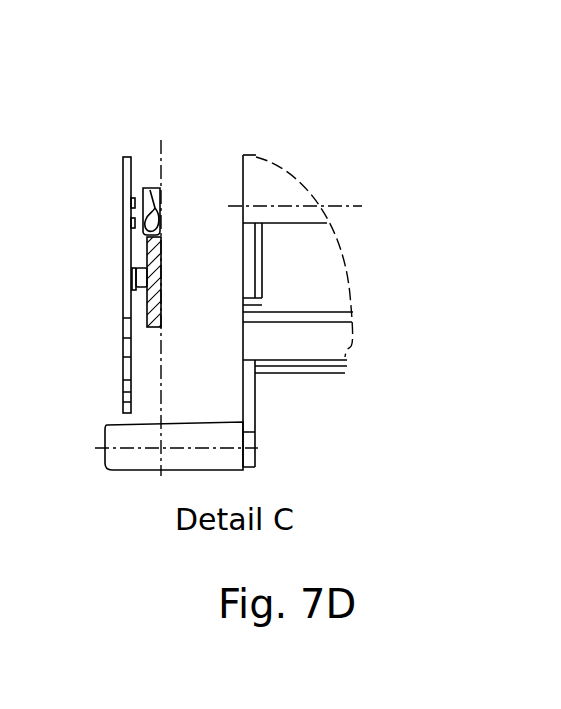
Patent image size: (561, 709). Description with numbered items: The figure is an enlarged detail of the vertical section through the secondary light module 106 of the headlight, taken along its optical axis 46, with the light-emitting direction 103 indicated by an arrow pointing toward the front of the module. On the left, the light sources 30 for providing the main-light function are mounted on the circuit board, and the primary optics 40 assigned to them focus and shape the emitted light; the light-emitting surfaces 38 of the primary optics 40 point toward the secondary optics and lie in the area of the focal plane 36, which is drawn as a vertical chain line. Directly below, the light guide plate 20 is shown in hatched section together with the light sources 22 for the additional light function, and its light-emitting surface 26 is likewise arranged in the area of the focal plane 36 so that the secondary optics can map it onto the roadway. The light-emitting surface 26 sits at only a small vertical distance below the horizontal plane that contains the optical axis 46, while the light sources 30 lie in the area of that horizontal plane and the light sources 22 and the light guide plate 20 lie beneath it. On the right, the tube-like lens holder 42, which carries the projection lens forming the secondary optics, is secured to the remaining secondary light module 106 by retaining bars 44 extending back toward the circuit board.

The light guide plate 20 is at (150, 251).
The light sources for the additional light function 22 is at (130, 280).
The light-emitting surface of the light guide plate 26 is at (170, 283).
The light sources for the main-light function 30 is at (130, 222).
The focal plane of the secondary optics 36 is at (163, 148).
The light-emitting surfaces of the primary optics 38 is at (162, 220).
The primary optics 40 is at (150, 188).
The lens holder 42 is at (316, 293).
The retaining bars 44 is at (135, 457).
The optical axis of the secondary light module 46 is at (343, 207).
The light-emitting direction 103 is at (297, 162).
The secondary light module 106 is at (290, 112).